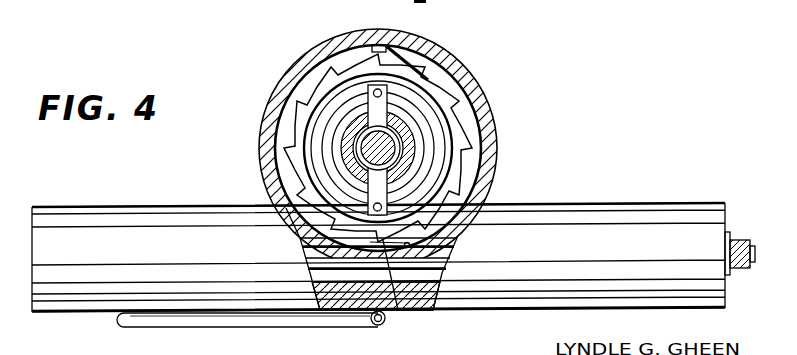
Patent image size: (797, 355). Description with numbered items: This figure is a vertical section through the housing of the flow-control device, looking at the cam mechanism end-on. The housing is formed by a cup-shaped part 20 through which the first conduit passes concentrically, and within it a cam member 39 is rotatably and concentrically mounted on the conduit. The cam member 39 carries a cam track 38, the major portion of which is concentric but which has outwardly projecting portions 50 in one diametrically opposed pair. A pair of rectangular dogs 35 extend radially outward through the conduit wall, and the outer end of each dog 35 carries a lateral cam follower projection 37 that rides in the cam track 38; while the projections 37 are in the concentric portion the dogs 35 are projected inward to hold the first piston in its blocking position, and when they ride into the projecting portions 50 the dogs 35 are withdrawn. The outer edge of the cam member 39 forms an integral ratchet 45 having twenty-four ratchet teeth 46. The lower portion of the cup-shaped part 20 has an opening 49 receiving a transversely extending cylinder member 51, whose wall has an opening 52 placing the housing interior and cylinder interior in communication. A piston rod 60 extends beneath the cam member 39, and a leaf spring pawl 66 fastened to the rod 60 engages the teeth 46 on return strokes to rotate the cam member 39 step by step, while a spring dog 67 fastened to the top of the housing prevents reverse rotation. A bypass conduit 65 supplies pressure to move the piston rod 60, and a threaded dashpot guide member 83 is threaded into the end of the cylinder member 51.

The cup-shaped part 20 is at (259, 163).
The dogs 35 is at (383, 94).
The cam follower projection 37 is at (401, 36).
The cam track 38 is at (436, 146).
The cam member 39 is at (470, 177).
The ratchet 45 is at (463, 98).
The ratchet teeth 46 is at (289, 113).
The opening 49 is at (478, 210).
The outwardly projecting portions 50 is at (327, 63).
The cylinder member 51 is at (583, 204).
The opening 52 is at (284, 207).
The piston rod 60 is at (440, 258).
The bypass conduit 65 is at (272, 327).
The leaf spring pawl 66 is at (400, 310).
The spring dog 67 is at (393, 52).
The threaded dashpot guide member 83 is at (740, 270).